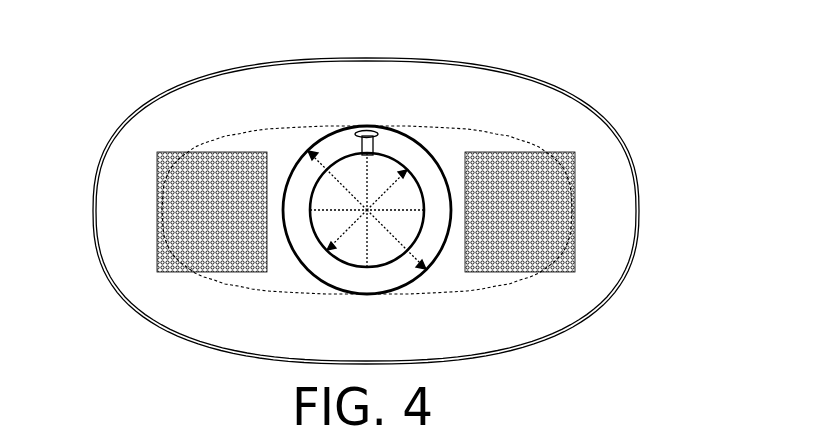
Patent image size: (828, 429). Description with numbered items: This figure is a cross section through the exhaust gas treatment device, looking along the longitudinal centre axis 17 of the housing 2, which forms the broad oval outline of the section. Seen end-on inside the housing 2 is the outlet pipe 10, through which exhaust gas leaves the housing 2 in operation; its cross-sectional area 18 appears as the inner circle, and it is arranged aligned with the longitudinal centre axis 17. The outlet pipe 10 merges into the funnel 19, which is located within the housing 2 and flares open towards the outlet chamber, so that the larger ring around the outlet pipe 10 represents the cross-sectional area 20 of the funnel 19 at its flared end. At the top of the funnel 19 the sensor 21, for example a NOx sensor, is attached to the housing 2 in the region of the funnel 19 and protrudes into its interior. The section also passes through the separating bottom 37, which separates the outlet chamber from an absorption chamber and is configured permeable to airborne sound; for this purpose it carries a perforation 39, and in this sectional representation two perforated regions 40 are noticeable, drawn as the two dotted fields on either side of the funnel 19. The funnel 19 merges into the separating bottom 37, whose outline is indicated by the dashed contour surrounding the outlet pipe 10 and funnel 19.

The housing 2 is at (641, 233).
The outlet pipe 10 is at (425, 192).
The longitudinal centre axis 17 is at (367, 210).
The cross-sectional area 18 is at (390, 185).
The funnel 19 is at (440, 252).
The cross-sectional area 20 is at (388, 235).
The sensor 21 is at (378, 147).
The separating bottom 37 is at (545, 108).
The perforation 39 is at (232, 153).
The perforated regions 40 is at (157, 188).